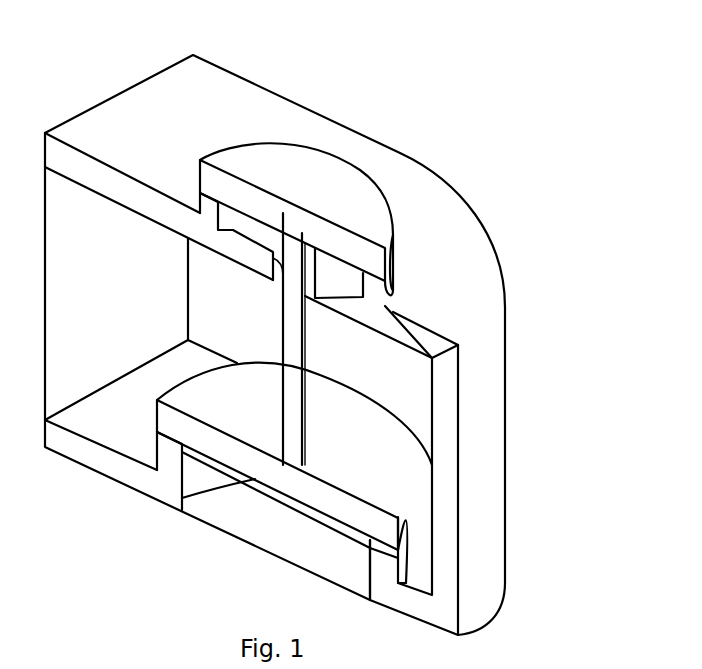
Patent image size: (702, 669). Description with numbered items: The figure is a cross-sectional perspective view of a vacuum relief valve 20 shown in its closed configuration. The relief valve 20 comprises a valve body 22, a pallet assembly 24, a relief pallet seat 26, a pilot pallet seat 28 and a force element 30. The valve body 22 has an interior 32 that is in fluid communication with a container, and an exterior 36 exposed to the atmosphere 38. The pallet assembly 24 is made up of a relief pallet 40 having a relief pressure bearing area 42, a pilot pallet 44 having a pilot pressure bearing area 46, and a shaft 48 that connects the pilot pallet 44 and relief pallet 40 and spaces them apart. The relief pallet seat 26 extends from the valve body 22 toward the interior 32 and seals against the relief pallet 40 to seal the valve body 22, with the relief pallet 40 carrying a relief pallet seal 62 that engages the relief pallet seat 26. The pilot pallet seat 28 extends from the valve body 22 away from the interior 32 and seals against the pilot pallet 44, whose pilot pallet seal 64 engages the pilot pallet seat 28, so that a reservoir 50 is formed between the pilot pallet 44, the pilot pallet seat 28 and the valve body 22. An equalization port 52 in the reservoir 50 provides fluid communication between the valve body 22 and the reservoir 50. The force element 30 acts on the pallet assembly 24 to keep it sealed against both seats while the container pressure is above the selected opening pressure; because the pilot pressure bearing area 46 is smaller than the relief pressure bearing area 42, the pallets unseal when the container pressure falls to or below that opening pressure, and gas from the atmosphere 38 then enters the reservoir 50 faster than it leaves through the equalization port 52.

The relief valve 20 is at (515, 138).
The valve body 22 is at (123, 125).
The pallet assembly 24 is at (315, 403).
The relief pallet seat 26 is at (194, 470).
The pilot pallet seat 28 is at (242, 224).
The force element 30 is at (310, 455).
The interior 32 is at (418, 404).
The exterior 36 is at (108, 480).
The atmosphere 38 is at (562, 309).
The relief pallet 40 is at (318, 498).
The relief pressure bearing area 42 is at (233, 378).
The pilot pallet 44 is at (297, 162).
The pilot pressure bearing area 46 is at (337, 272).
The shaft 48 is at (295, 356).
The reservoir 50 is at (262, 232).
The equalization port 52 is at (279, 277).
The relief pallet seal 62 is at (357, 538).
The pilot pallet seal 64 is at (390, 286).